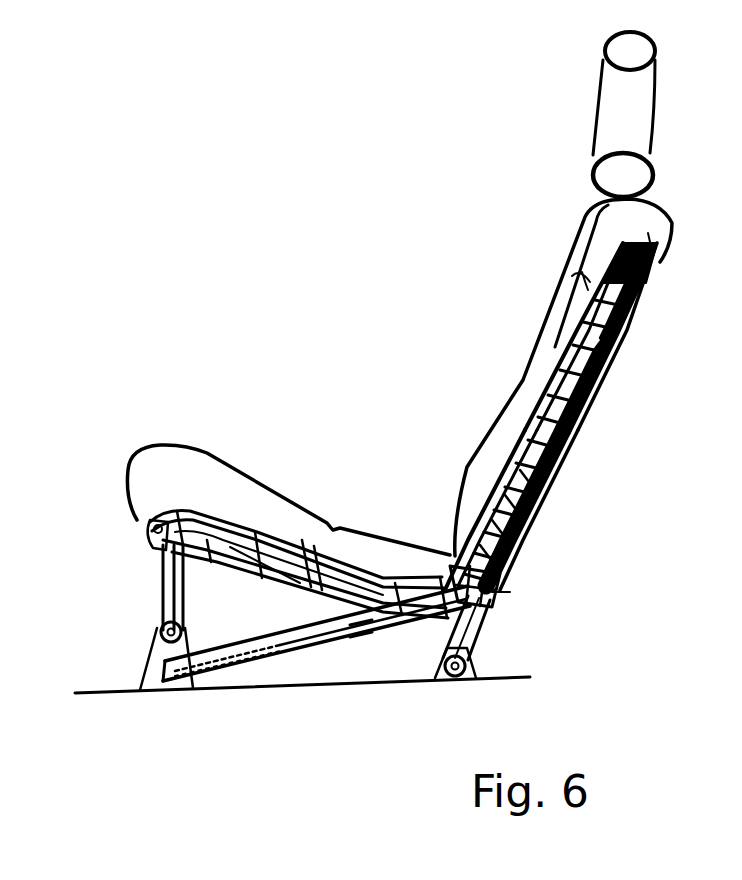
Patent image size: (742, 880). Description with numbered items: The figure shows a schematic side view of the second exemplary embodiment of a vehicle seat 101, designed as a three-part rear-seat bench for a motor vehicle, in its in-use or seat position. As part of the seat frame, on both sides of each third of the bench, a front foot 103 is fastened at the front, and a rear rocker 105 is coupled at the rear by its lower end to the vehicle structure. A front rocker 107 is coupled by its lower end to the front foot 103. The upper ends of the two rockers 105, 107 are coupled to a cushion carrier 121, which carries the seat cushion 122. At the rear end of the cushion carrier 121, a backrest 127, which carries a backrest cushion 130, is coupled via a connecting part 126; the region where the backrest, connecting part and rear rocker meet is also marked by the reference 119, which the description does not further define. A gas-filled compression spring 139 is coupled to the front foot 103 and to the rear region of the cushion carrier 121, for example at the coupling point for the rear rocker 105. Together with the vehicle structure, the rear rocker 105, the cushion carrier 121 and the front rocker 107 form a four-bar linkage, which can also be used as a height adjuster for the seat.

The vehicle seat 101 is at (374, 313).
The backrest cushion 130 is at (524, 396).
The backrest 127 is at (550, 473).
The connecting part 126 is at (517, 548).
The junction bracket 119 is at (493, 603).
The rear rocker 105 is at (475, 645).
The seat cushion 122 is at (222, 485).
The cushion carrier 121 is at (152, 543).
The front rocker 107 is at (162, 596).
The front foot 103 is at (153, 682).
The gas-filled compression spring 139 is at (337, 645).